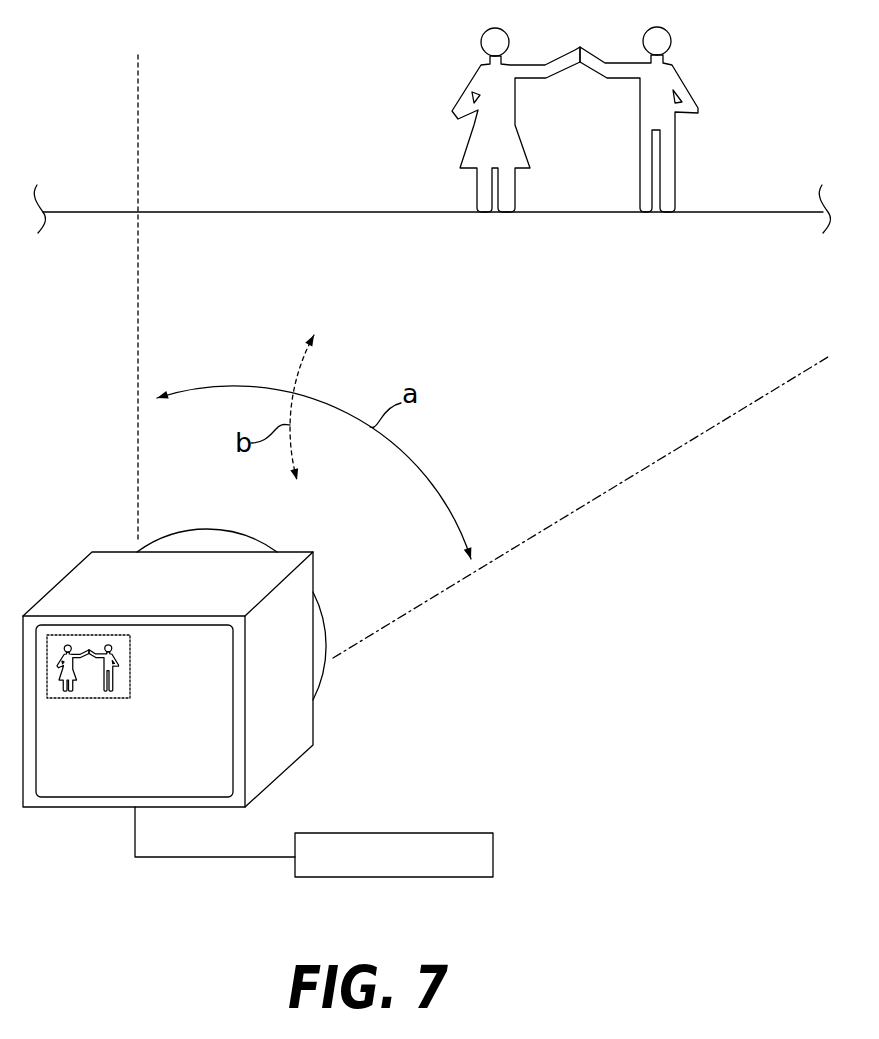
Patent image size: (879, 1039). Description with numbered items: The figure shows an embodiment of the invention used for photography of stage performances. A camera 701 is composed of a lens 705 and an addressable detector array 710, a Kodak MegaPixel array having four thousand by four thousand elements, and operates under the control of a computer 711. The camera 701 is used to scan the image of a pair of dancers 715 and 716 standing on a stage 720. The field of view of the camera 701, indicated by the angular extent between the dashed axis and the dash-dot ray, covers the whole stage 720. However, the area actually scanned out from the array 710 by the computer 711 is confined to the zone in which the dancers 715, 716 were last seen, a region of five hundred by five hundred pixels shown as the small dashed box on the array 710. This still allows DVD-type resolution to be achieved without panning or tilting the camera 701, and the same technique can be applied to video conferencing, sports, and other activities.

The camera 701 is at (313, 701).
The lens 705 is at (163, 540).
The detector array 710 is at (233, 773).
The computer 711 is at (377, 833).
The dancer 715 is at (467, 97).
The dancer 716 is at (638, 118).
The stage 720 is at (348, 213).